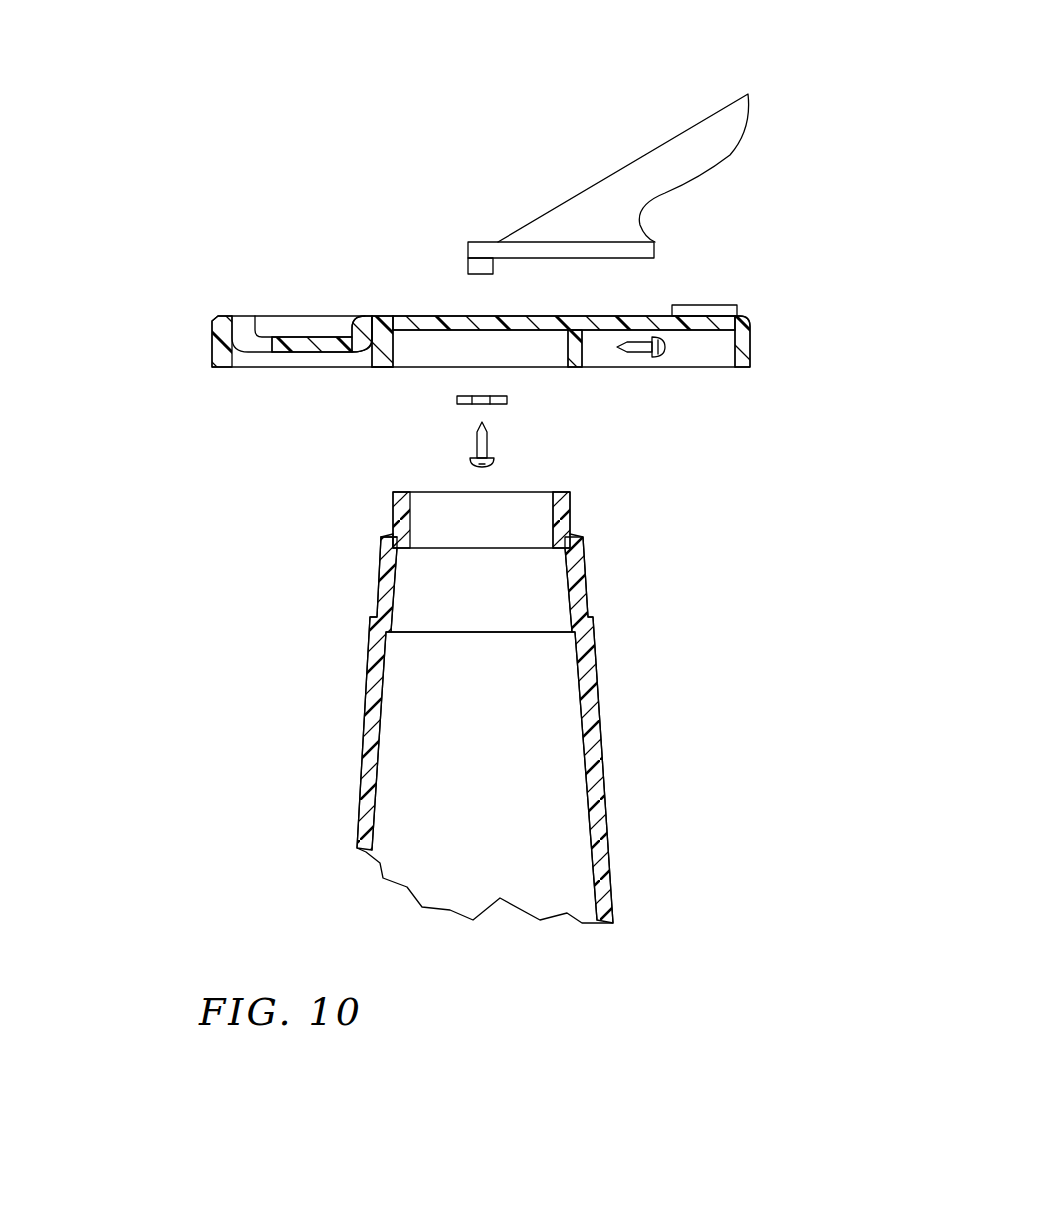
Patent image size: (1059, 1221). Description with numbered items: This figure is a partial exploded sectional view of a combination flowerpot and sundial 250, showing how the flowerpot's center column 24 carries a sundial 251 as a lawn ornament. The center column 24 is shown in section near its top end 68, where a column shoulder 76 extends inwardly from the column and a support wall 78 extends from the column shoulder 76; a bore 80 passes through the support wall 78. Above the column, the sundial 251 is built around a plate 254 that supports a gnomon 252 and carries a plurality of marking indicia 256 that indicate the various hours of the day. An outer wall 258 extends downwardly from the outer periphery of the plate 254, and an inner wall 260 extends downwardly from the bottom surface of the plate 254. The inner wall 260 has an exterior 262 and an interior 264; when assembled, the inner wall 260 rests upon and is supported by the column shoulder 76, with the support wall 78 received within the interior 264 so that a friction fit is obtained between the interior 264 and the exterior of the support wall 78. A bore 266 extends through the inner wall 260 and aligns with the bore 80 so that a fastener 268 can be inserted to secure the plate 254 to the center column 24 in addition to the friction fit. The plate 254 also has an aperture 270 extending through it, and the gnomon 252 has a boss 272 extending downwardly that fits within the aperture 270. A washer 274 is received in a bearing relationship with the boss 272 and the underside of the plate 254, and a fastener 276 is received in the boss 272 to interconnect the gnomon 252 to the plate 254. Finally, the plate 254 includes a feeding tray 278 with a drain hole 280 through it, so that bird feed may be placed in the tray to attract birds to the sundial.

The center column 24 is at (621, 768).
The top end 68 is at (403, 490).
The column shoulder 76 is at (390, 533).
The support wall 78 is at (392, 520).
The bore 80 is at (560, 517).
The combination flowerpot and sundial 250 is at (194, 700).
The sundial 251 is at (770, 336).
The gnomon 252 is at (653, 142).
The plate 254 is at (640, 316).
The marking indicia 256 is at (728, 305).
The outer wall 258 is at (212, 353).
The inner wall 260 is at (380, 368).
The exterior 262 is at (373, 355).
The interior 264 is at (400, 367).
The bore 266 is at (580, 348).
The fastener 268 is at (667, 353).
The aperture 270 is at (483, 318).
The boss 272 is at (468, 266).
The washer 274 is at (508, 400).
The fastener 276 is at (490, 443).
The feeding tray 278 is at (307, 337).
The drain hole 280 is at (270, 347).